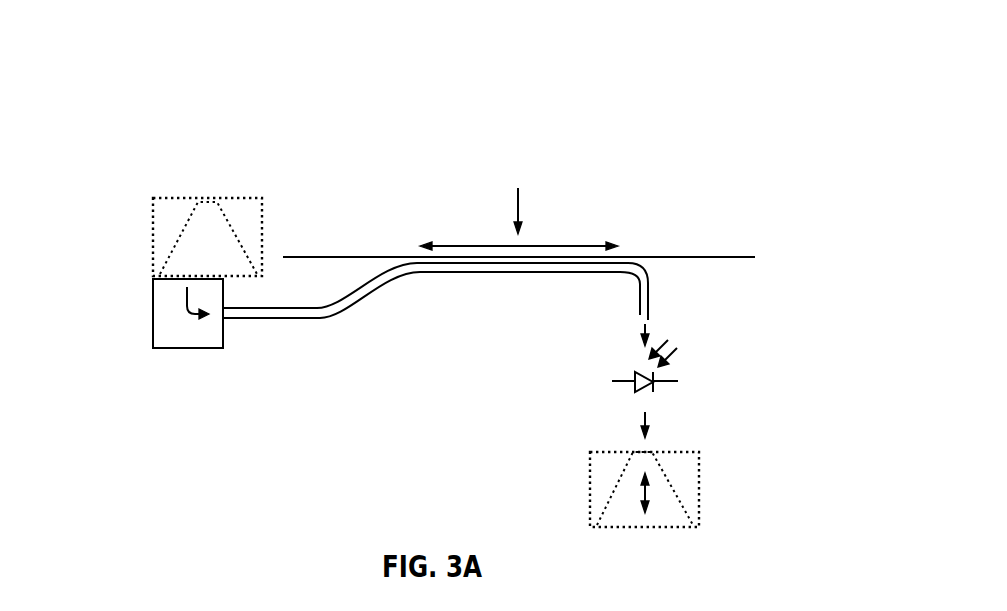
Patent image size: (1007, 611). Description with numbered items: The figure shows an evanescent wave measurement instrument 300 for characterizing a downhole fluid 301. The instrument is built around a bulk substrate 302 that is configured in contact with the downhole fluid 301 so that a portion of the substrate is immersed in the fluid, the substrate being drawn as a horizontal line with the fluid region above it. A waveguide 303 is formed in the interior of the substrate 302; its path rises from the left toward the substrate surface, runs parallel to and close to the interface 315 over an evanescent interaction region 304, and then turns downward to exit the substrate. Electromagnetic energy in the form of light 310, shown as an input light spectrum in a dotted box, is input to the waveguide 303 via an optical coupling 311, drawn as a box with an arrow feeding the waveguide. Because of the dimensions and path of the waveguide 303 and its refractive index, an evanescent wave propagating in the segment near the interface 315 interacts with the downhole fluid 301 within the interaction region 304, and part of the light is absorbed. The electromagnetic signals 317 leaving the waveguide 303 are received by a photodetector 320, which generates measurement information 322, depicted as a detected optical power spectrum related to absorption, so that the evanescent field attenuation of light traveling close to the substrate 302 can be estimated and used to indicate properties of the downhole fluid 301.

The evanescent wave measurement instrument 300 is at (117, 67).
The downhole fluid 301 is at (742, 167).
The bulk substrate 302 is at (560, 290).
The waveguide 303 is at (270, 318).
The evanescent interaction region 304 is at (562, 122).
The light 310 is at (165, 238).
The optical coupling 311 is at (187, 348).
The interface 315 is at (642, 257).
The electromagnetic signals 317 is at (643, 328).
The photodetector 320 is at (685, 382).
The measurement information 322 is at (700, 482).